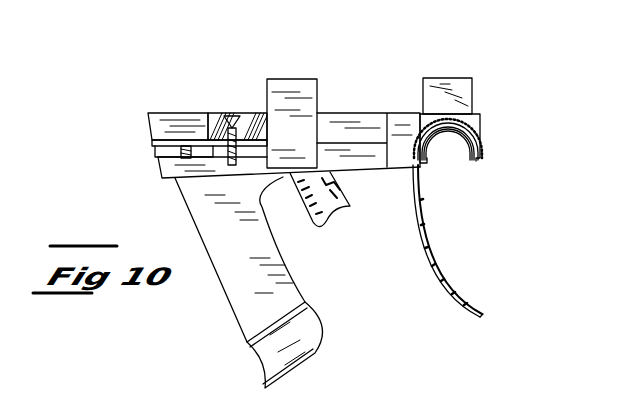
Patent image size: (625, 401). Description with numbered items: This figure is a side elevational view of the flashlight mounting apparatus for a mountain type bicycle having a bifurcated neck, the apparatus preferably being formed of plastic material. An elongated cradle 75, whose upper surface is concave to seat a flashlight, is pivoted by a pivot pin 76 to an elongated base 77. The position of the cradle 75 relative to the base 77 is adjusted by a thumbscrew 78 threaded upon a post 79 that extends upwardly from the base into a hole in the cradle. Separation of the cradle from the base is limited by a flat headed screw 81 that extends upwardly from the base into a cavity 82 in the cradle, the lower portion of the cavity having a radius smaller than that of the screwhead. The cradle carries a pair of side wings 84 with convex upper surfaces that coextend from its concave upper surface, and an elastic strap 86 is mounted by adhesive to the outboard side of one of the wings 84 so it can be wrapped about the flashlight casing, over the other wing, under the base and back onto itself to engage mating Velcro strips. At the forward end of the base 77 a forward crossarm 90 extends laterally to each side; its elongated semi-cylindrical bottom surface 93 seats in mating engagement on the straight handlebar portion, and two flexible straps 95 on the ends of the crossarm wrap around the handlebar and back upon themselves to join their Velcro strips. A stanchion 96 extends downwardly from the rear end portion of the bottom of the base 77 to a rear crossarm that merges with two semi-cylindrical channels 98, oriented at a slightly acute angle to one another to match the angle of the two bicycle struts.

The cradle 75 is at (147, 122).
The pivot pin 76 is at (414, 114).
The base 77 is at (162, 175).
The thumbscrew 78 is at (150, 144).
The post 79 is at (150, 152).
The flat headed screw 81 is at (222, 112).
The cavity 82 is at (238, 108).
The side wings 84 is at (287, 78).
The elastic strap 86 is at (350, 208).
The forward crossarm 90 is at (479, 122).
The bottom surface 93 is at (465, 146).
The flexible straps 95 is at (447, 283).
The stanchion 96 is at (291, 266).
The semi-cylindrical channels 98 is at (313, 355).